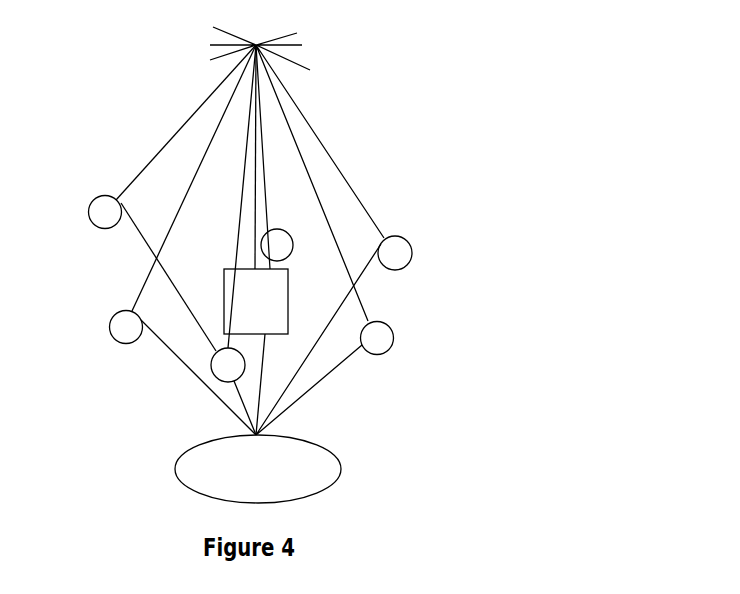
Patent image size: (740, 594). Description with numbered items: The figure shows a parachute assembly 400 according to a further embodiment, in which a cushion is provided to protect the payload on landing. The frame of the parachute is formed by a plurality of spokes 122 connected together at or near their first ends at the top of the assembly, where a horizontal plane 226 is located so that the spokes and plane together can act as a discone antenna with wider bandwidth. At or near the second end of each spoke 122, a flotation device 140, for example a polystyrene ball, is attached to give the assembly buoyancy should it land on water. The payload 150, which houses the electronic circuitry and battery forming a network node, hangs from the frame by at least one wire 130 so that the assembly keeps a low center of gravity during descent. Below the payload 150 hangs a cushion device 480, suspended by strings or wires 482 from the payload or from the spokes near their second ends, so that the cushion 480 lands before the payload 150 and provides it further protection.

The parachute assembly 400 is at (251, 265).
The horizontal plane on the top 226 is at (242, 48).
The wire 130 is at (253, 227).
The spokes 122 is at (302, 153).
The payload 150 is at (256, 301).
The flotation device 140 is at (396, 338).
The lower strings 482 is at (315, 353).
The cushion device 480 is at (258, 469).